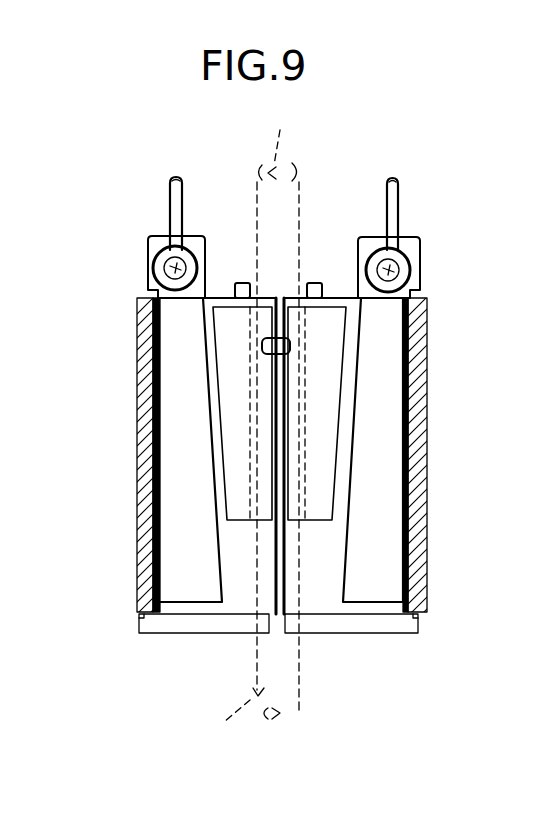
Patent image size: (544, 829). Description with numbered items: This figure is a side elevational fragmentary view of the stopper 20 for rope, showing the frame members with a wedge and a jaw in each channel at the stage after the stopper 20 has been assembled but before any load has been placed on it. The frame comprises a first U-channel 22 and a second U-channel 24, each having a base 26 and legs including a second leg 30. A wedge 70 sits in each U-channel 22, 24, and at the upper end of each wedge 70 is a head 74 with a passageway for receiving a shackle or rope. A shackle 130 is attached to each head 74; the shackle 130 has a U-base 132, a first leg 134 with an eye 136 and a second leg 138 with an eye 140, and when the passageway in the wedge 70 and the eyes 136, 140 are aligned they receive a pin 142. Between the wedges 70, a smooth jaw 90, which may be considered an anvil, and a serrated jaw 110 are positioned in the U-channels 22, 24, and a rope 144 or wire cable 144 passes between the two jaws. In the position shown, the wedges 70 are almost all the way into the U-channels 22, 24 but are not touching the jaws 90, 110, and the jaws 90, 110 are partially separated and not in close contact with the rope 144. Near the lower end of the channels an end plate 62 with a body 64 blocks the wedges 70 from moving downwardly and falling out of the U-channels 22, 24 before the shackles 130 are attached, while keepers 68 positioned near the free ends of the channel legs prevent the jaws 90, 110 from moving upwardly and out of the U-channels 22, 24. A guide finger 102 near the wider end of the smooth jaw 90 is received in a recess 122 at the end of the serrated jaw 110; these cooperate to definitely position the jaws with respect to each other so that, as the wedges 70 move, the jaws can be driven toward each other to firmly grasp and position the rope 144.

The stopper 20 is at (137, 530).
The first U-channel 22 is at (137, 437).
The second U-channel 24 is at (428, 512).
The base 26 is at (136, 412).
The second leg 30 is at (238, 600).
The end plate 62 is at (176, 622).
The body 64 is at (198, 630).
The keeper 68 is at (236, 284).
The wedge 70 is at (203, 549).
The head 74 is at (148, 238).
The smooth jaw 90 is at (244, 341).
The guide finger 102 is at (264, 346).
The serrated jaw 110 is at (343, 335).
The recess 122 is at (300, 346).
The shackle 130 is at (169, 188).
The U-base 132 is at (175, 177).
The first leg 134 is at (398, 198).
The eye 136 is at (420, 255).
The second leg 138 is at (170, 200).
The eye 140 is at (147, 253).
The pin 142 is at (172, 268).
The rope 144 is at (240, 425).